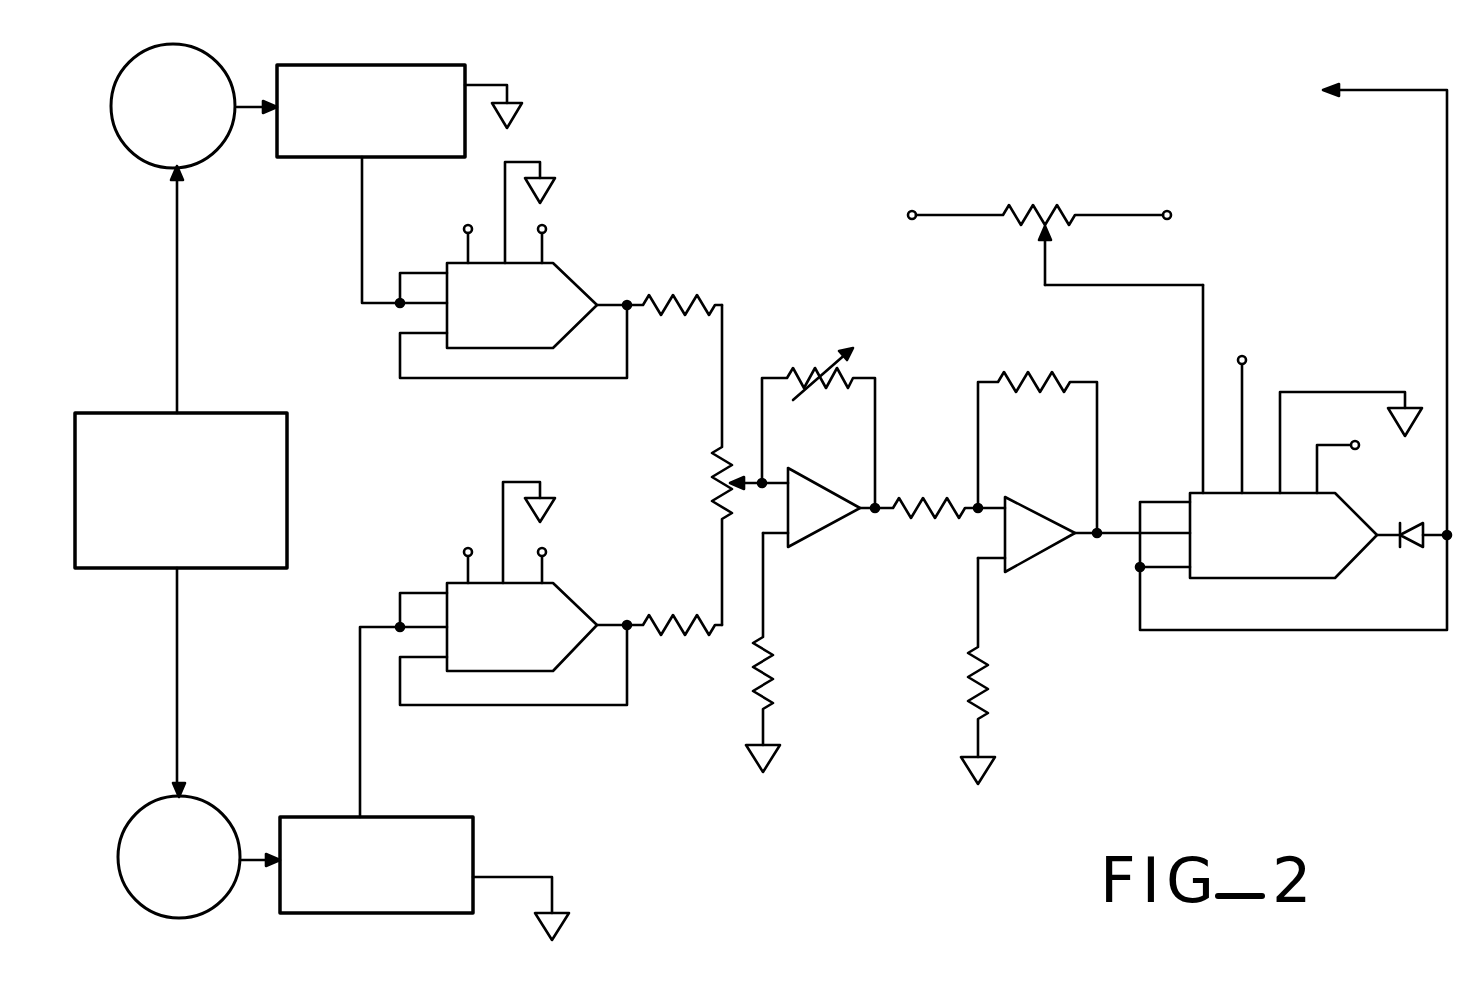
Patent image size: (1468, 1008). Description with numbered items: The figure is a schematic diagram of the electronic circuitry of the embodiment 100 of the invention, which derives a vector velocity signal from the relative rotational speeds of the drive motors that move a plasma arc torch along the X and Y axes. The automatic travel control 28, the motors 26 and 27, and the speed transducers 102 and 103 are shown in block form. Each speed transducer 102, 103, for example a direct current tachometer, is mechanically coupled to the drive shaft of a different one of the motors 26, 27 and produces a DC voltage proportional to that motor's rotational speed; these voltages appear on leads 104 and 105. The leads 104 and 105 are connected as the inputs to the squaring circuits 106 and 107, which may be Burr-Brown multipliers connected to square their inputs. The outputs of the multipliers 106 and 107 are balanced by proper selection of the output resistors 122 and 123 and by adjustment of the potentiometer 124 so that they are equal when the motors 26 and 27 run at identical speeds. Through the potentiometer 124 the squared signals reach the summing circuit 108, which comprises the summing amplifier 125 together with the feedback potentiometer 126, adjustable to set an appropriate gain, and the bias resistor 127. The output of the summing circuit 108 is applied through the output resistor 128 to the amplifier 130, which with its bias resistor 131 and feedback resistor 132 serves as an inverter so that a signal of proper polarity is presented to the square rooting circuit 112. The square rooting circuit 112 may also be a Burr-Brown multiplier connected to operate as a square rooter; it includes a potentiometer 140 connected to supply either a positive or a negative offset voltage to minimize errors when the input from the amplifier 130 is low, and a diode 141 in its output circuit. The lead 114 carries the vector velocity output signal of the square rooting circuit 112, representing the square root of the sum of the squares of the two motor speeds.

The motor 26 is at (133, 158).
The motor 27 is at (217, 807).
The automatic travel control 28 is at (247, 570).
The embodiment 100 is at (735, 183).
The speed transducer 102 is at (308, 160).
The speed transducer 103 is at (440, 813).
The lead 104 is at (360, 258).
The lead 105 is at (360, 712).
The squaring circuit 106 is at (453, 262).
The squaring circuit 107 is at (452, 582).
The summing circuit 108 is at (897, 395).
The square rooting circuit 112 is at (1285, 365).
The lead 114 is at (1445, 200).
The output resistor 122 is at (667, 298).
The output resistor 123 is at (687, 637).
The potentiometer 124 is at (717, 480).
The summing amplifier 125 is at (820, 537).
The feedback potentiometer 126 is at (790, 370).
The bias resistor 127 is at (773, 677).
The output resistor 128 is at (923, 497).
The amplifier 130 is at (1030, 562).
The bias resistor 131 is at (985, 677).
The feedback resistor 132 is at (1030, 378).
The potentiometer 140 is at (1033, 203).
The diode 141 is at (1417, 547).